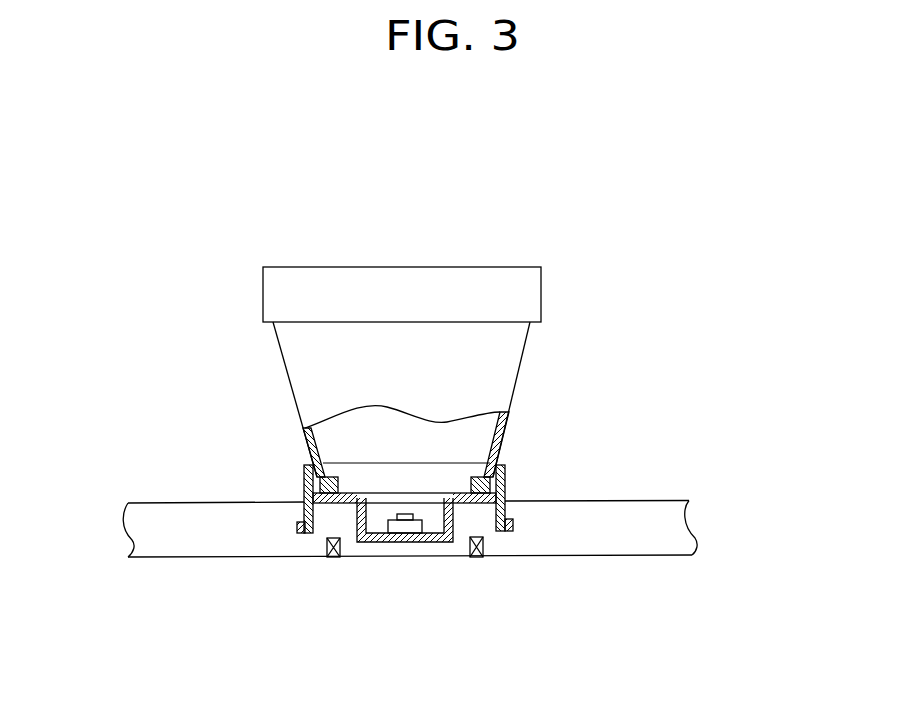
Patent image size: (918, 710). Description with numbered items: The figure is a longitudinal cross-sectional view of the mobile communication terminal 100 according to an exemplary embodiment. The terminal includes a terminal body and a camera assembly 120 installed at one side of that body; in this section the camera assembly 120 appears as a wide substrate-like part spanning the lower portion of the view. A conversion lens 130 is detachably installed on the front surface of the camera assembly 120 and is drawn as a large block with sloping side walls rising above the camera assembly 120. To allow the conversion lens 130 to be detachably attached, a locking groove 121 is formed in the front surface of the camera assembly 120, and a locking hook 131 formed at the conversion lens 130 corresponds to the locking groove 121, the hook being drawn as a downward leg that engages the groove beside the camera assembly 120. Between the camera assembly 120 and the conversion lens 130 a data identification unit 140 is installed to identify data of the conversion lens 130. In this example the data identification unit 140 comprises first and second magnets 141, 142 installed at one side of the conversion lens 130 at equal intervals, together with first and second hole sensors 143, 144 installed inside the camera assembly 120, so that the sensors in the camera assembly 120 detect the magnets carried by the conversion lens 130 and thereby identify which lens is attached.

The mobile communication terminal 100 is at (637, 210).
The camera assembly 120 is at (399, 545).
The locking groove 121 is at (513, 527).
The conversion lens 130 is at (470, 262).
The lens leg 131 is at (506, 510).
The data identification unit 140 is at (207, 372).
The first magnet 141 is at (307, 450).
The second magnet 142 is at (477, 477).
The first hole sensor 143 is at (334, 538).
The second hole sensor 144 is at (452, 493).